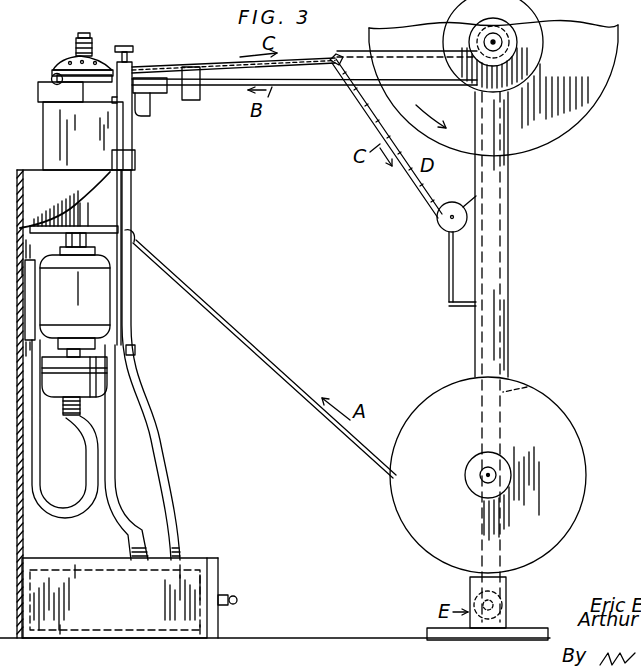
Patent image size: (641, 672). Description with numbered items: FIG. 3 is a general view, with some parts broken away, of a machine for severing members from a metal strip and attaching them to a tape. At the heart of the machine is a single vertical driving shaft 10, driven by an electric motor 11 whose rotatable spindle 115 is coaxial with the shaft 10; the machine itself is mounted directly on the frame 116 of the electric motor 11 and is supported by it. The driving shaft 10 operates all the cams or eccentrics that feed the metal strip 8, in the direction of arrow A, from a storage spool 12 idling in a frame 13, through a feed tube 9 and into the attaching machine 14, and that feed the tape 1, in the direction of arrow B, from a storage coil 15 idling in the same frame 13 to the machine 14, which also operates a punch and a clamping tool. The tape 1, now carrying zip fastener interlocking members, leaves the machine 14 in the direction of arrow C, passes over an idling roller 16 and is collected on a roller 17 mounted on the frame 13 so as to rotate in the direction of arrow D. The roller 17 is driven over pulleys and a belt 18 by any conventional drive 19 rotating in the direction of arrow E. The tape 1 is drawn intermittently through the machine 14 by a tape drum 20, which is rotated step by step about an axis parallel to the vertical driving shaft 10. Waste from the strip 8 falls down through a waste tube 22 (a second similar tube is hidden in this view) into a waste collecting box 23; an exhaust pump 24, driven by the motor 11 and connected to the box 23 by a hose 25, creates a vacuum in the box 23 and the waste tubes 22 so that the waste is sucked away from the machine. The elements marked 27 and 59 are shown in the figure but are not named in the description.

The tape 1 is at (295, 81).
The metal strip 8 is at (273, 373).
The feed tube 9 is at (133, 237).
The driving shaft 10 is at (77, 212).
The electric motor 11 is at (67, 309).
The storage spool 12 is at (542, 410).
The frame 13 is at (507, 348).
The attaching machine 14 is at (43, 143).
The storage coil 15 is at (520, 62).
The idling roller 16 is at (444, 225).
The roller 17 is at (573, 112).
The belt 18 is at (527, 387).
The conventional drive 19 is at (506, 607).
The tape drum 20 is at (51, 69).
The waste tube 22 is at (152, 423).
The waste collecting box 23 is at (113, 615).
The exhaust pump 24 is at (67, 376).
The hose 25 is at (87, 474).
The block 27 is at (187, 92).
The stem 59 is at (91, 36).
The rotatable spindle 115 is at (85, 233).
The frame of the electric motor 116 is at (22, 268).